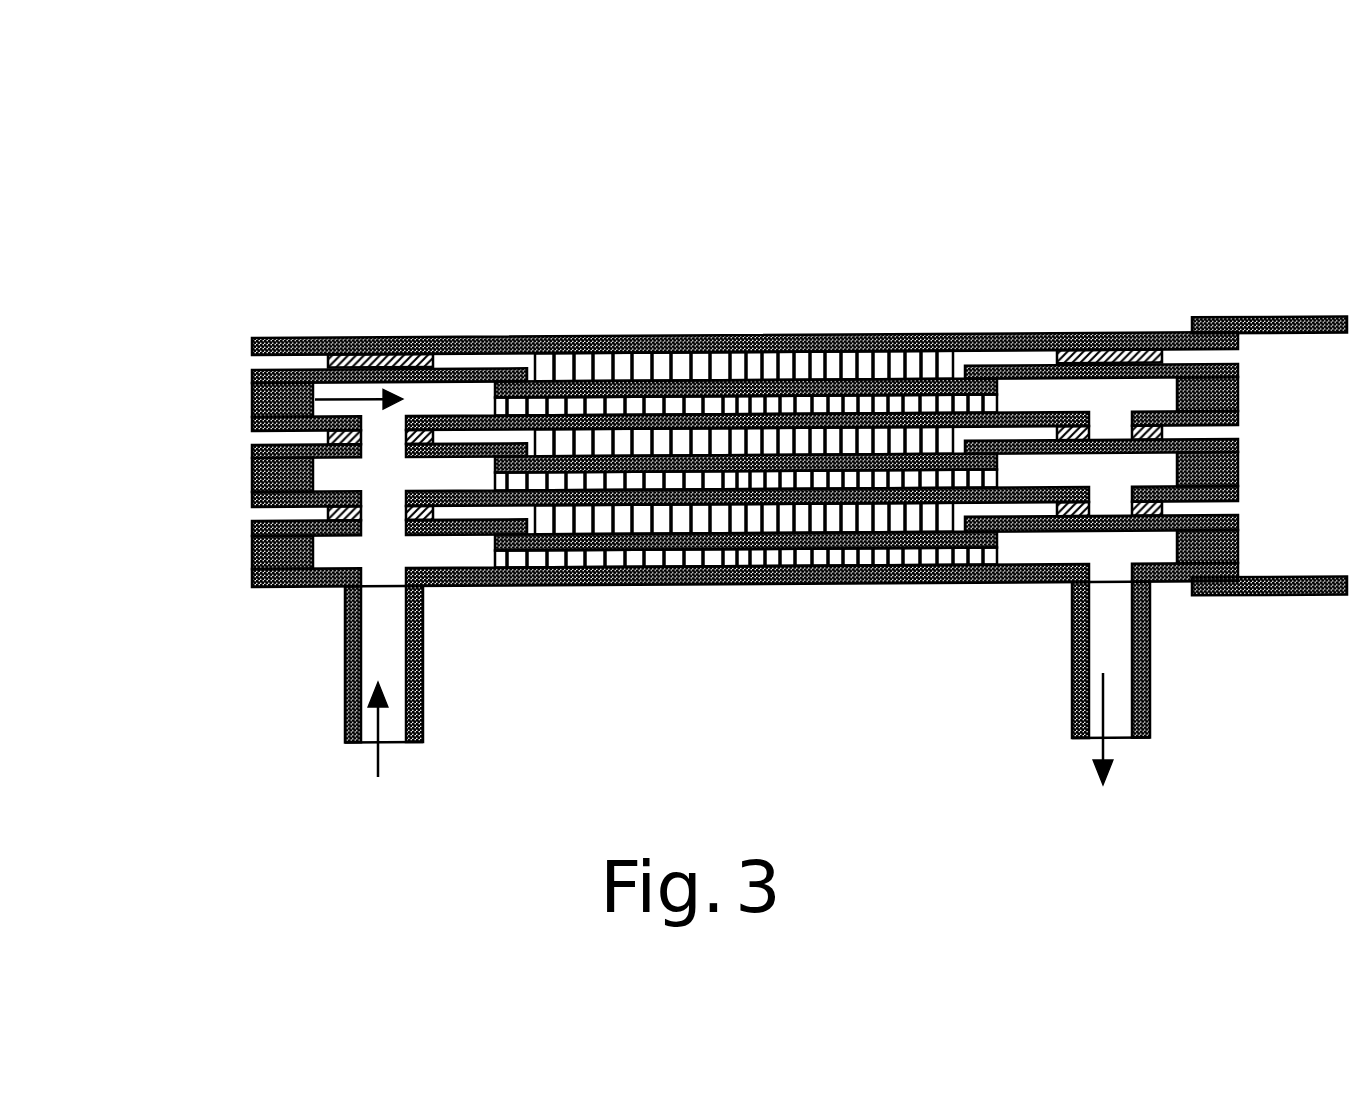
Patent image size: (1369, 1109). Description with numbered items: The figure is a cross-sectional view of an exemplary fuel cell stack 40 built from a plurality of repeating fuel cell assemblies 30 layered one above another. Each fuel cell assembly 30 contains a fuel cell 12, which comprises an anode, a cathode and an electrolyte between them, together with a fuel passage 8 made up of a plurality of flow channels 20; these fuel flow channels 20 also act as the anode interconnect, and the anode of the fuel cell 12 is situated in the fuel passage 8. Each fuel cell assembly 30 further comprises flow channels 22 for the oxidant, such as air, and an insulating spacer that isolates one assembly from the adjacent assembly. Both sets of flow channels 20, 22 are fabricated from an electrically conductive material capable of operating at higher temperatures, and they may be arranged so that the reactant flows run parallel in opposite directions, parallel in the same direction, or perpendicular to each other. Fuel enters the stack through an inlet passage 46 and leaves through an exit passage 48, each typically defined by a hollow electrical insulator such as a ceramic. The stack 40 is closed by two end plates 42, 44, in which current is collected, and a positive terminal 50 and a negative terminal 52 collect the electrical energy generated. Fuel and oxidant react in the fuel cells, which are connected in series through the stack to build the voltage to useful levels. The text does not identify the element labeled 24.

The fuel passage 8 is at (384, 539).
The fuel cell 12 is at (938, 360).
The flow channels 20 is at (632, 563).
The flow channels 22 is at (757, 358).
The seal 24 is at (1075, 346).
The fuel cell assembly 30 is at (240, 508).
The fuel cell stack 40 is at (128, 168).
The end plate 42 is at (632, 340).
The end plate 44 is at (787, 583).
The inlet passage 46 is at (390, 716).
The exit passage 48 is at (1108, 708).
The positive terminal 50 is at (1272, 318).
The negative terminal 52 is at (1288, 597).